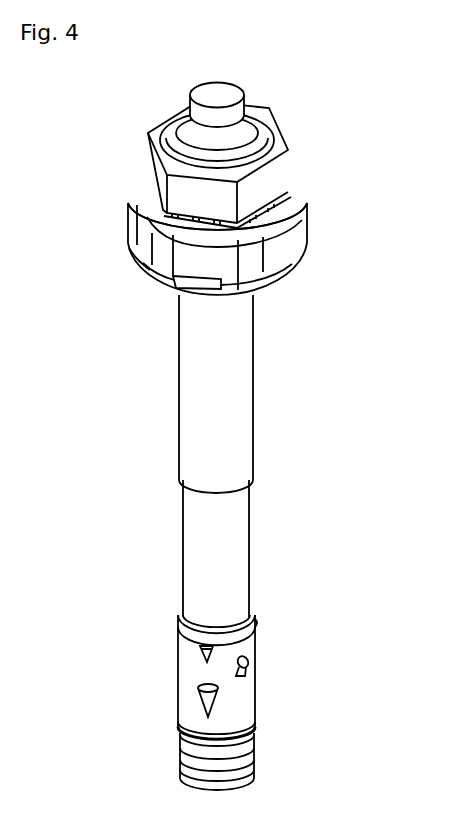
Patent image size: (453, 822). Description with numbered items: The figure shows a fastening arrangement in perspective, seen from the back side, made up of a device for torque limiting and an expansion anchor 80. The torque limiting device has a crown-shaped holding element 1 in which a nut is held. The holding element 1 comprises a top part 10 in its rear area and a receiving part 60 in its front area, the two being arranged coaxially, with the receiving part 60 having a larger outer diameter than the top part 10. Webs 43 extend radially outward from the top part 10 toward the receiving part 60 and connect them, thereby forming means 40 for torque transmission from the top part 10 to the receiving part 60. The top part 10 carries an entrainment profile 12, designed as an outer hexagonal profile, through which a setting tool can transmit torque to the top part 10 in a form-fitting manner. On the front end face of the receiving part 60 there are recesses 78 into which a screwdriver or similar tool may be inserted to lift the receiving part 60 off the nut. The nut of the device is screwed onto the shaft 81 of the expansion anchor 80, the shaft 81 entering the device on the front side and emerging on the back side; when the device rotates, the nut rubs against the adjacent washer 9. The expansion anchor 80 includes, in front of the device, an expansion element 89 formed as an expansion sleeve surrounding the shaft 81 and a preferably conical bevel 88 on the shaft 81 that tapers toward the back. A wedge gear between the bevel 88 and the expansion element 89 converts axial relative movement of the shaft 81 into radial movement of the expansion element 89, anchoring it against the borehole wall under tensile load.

The holding element 1 is at (226, 401).
The washer 9 is at (273, 283).
The top part 10 is at (262, 121).
The entrainment profile 12 is at (157, 170).
The means for torque transmission 40 is at (157, 193).
The webs 43 is at (263, 212).
The receiving part 60 is at (273, 243).
The recesses 78 is at (205, 285).
The expansion anchor 80 is at (230, 415).
The shaft 81 is at (283, 530).
The bevel 88 is at (235, 748).
The expansion element 89 is at (235, 677).